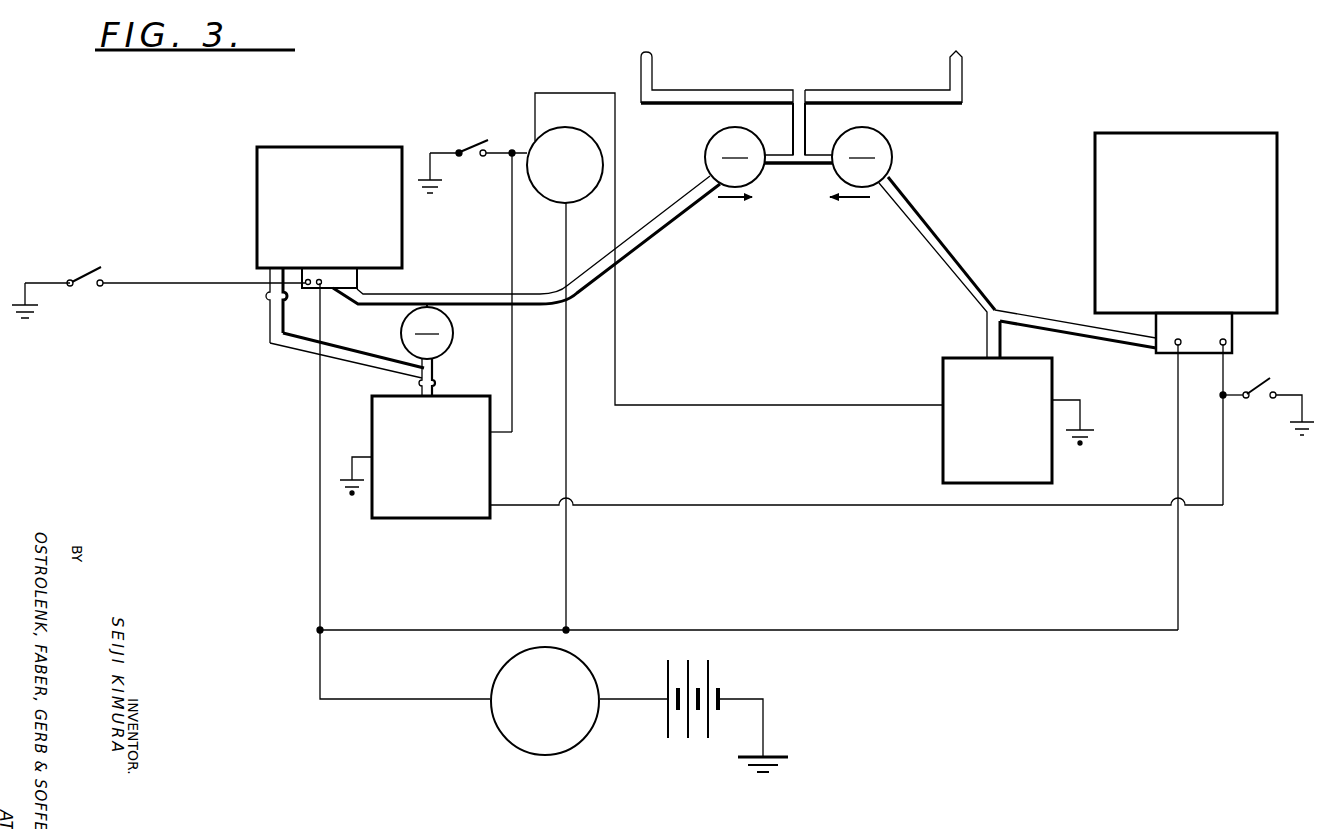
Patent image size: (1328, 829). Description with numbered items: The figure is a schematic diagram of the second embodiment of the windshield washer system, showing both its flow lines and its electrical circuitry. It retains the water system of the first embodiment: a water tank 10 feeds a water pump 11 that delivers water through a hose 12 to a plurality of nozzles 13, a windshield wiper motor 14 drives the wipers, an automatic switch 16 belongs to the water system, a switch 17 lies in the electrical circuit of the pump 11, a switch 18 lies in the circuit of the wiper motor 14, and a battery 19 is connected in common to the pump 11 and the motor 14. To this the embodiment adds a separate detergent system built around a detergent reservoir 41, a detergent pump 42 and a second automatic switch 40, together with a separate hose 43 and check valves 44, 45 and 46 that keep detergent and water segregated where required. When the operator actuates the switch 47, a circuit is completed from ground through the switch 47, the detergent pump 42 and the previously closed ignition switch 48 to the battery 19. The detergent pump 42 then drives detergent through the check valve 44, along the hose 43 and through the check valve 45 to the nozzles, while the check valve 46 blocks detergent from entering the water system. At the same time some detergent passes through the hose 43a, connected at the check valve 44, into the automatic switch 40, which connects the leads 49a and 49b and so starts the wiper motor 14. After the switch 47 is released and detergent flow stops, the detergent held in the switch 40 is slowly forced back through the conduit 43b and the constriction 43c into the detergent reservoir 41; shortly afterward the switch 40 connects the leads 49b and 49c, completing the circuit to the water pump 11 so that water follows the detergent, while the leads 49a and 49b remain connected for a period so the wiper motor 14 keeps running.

The water tank 10 is at (1198, 286).
The water pump 11 is at (1234, 342).
The hose 12 is at (1048, 318).
The nozzles 13 is at (655, 65).
The windshield wiper motor 14 is at (562, 204).
The automatic switch 16 is at (1001, 465).
The switch 17 is at (1258, 402).
The switch 18 is at (482, 143).
The battery 19 is at (700, 745).
The second automatic switch 40 is at (441, 502).
The detergent reservoir 41 is at (329, 207).
The detergent pump 42 is at (358, 284).
The hose 43 is at (640, 244).
The hose 43a is at (433, 386).
The conduit 43b is at (307, 352).
The constriction 43c is at (268, 300).
The check valve 44 is at (454, 336).
The check valve 45 is at (710, 147).
The check valve 46 is at (886, 143).
The switch 47 is at (98, 250).
The ignition switch 48 is at (528, 752).
The lead 49a is at (514, 418).
The lead 49b is at (365, 437).
The lead 49c is at (492, 508).